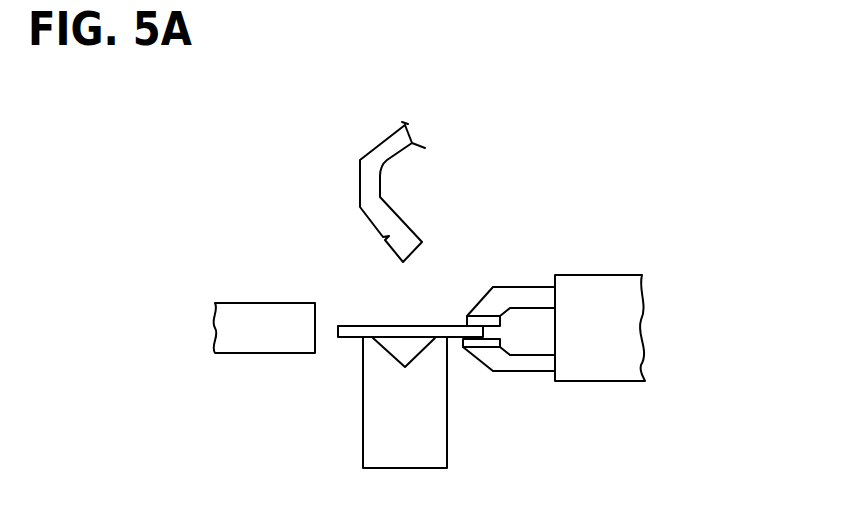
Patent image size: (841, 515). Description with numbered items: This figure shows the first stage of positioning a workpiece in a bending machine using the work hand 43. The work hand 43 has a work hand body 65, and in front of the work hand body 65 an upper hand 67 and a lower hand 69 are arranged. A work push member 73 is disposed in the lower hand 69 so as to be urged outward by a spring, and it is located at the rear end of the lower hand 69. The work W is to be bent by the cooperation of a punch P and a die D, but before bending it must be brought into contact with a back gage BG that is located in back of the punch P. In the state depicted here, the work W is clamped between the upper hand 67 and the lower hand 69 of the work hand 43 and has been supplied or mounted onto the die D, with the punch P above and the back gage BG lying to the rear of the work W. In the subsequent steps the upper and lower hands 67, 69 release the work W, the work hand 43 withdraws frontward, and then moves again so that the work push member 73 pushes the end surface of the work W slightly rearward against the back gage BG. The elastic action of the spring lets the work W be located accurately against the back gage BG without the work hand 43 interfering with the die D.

The punch P is at (360, 185).
The back gage BG is at (268, 312).
The work W is at (393, 330).
The die D is at (367, 428).
The work hand 43 is at (668, 283).
The work hand body 65 is at (607, 283).
The upper hand 67 is at (517, 295).
The lower hand 69 is at (520, 373).
The work push member 73 is at (462, 349).